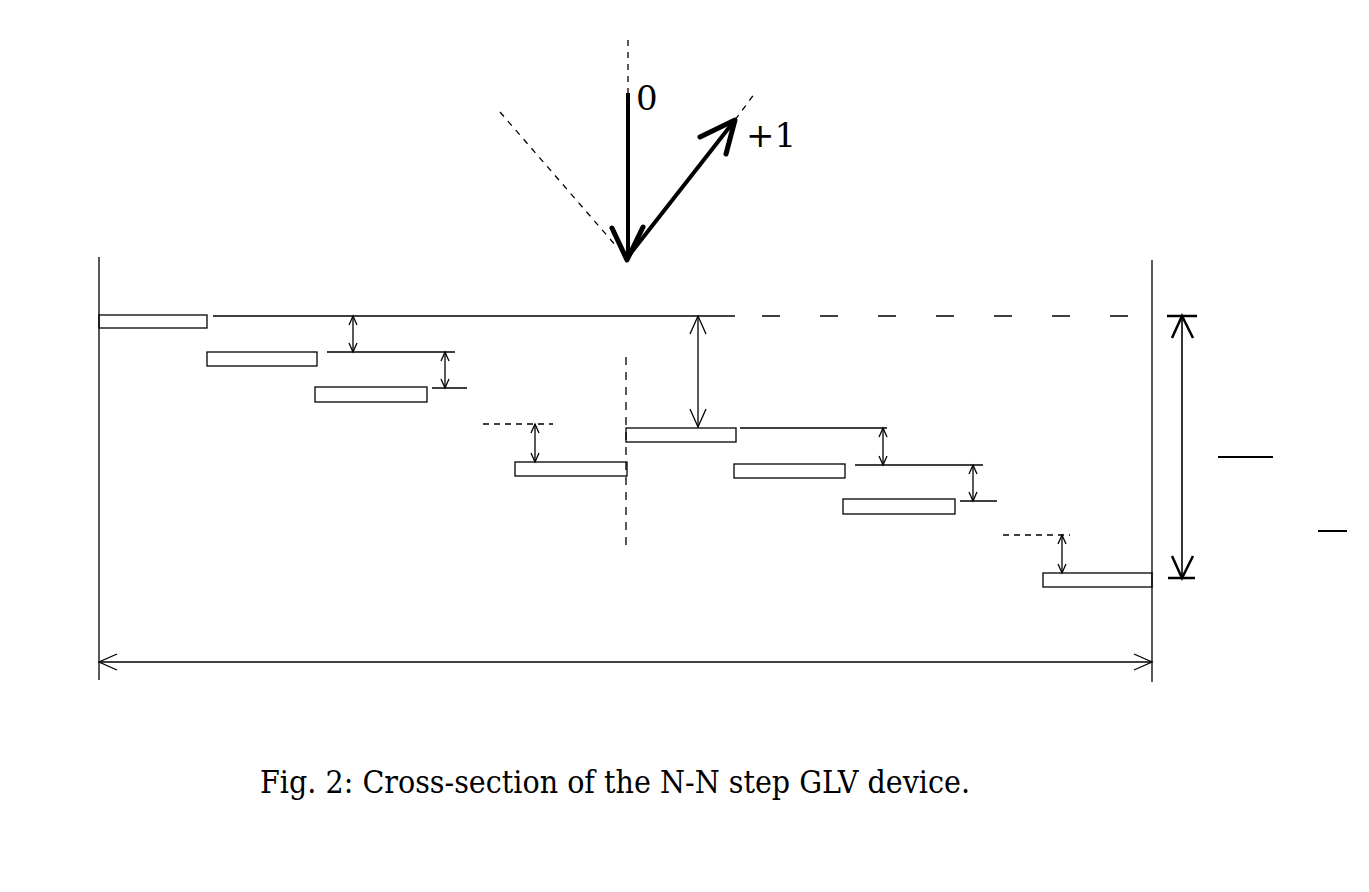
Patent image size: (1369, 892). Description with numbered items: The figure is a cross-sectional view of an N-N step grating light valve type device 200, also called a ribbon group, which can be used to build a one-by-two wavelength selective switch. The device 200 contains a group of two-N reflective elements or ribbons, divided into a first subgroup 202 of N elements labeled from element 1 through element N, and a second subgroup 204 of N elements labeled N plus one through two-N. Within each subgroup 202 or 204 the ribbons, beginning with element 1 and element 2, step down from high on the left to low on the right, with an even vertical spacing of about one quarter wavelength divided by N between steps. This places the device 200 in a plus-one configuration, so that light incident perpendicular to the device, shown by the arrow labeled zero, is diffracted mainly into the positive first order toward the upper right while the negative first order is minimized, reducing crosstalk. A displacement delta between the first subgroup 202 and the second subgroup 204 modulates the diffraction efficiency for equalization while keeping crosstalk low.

The N-N step GLV type device 200 is at (723, 526).
The first subgroup 202 is at (363, 461).
The second subgroup 204 is at (889, 469).
The first reflective element 1 is at (153, 339).
The second reflective element 2 is at (262, 375).